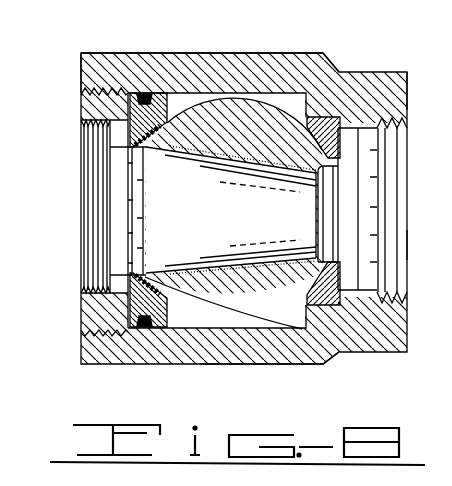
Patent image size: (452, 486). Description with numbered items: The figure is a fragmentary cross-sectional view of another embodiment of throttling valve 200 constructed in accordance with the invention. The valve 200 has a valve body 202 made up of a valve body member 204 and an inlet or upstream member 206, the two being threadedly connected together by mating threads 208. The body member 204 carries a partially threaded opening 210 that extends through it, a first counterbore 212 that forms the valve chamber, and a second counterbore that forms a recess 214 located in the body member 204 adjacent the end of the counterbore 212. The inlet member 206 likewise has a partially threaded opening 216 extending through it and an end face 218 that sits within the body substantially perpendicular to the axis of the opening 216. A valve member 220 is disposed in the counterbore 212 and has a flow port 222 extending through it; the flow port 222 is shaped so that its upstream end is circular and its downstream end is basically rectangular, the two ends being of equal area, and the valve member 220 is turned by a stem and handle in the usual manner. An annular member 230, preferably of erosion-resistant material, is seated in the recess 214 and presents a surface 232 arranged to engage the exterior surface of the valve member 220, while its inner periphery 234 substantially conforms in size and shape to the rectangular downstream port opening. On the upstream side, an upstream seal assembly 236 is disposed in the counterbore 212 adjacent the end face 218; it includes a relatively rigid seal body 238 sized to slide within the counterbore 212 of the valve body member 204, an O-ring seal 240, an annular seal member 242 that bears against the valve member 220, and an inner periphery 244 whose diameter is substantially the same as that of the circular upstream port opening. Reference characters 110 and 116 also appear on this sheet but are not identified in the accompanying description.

The throttling valve 200 is at (300, 46).
The valve body 202 is at (118, 53).
The valve body member 204 is at (214, 35).
The inlet or upstream member 206 is at (92, 106).
The mating threads 208 is at (93, 84).
The partially threaded opening 210 is at (393, 210).
The first counterbore 212 is at (254, 326).
The recess 214 is at (318, 309).
The partially threaded opening 216 is at (97, 210).
The end face 218 is at (133, 303).
The valve member 220 is at (256, 304).
The flow port 222 is at (242, 214).
The annular member 230 is at (330, 290).
The surface 232 is at (316, 148).
The inner periphery 234 is at (330, 165).
The upstream seal assembly 236 is at (162, 101).
The seal body 238 is at (157, 328).
The O-ring seal 240 is at (138, 330).
The annular seal member 242 is at (143, 277).
The inner periphery 244 is at (125, 148).
The mating fitting 110 is at (429, 97).
The mating fitting thread 116 is at (429, 245).